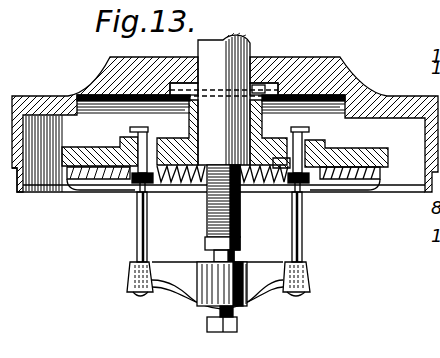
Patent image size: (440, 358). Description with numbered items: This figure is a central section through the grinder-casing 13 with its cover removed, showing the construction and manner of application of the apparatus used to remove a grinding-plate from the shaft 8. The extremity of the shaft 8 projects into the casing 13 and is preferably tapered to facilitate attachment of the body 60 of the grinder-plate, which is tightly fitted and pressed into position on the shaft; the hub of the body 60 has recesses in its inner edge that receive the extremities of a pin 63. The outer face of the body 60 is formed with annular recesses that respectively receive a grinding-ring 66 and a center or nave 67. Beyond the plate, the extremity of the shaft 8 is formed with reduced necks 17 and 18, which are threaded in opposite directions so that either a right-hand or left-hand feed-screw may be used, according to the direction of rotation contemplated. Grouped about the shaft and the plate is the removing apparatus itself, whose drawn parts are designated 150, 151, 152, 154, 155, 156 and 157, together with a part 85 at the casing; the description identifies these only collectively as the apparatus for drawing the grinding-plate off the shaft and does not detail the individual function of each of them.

The grinder-casing 13 is at (12, 108).
The body of grinder-plate 60 is at (72, 146).
The plate 154 is at (158, 94).
The shaft 8 is at (250, 40).
The pin 63 is at (265, 84).
The grinding-ring 66 is at (84, 180).
The ratchet teeth 156 is at (150, 183).
The center or nave 67 is at (266, 176).
The pin 155 is at (132, 128).
The housing lower edge 85 is at (17, 182).
The reduced neck 17 is at (216, 193).
The reduced neck 18 is at (207, 242).
The stem 157 is at (236, 243).
The bar 150 is at (188, 277).
The rod 152 is at (138, 236).
The lower nut 151 is at (239, 316).